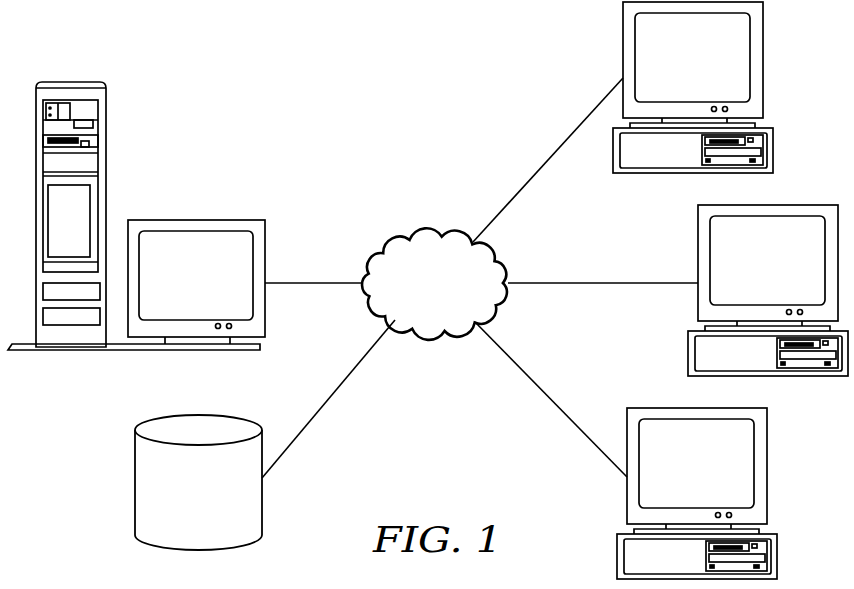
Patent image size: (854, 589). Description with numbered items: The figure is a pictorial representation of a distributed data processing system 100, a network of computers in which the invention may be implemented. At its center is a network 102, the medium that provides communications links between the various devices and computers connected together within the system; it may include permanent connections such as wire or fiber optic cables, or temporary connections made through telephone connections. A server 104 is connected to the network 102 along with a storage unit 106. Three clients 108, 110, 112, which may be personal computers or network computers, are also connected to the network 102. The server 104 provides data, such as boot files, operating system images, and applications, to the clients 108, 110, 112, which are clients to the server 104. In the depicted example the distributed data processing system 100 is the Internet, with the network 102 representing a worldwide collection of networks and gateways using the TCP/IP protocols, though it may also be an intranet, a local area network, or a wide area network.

The distributed data processing system 100 is at (288, 82).
The network 102 is at (418, 296).
The server 104 is at (178, 288).
The storage unit 106 is at (180, 504).
The client 108 is at (675, 72).
The client 110 is at (768, 290).
The client 112 is at (697, 493).